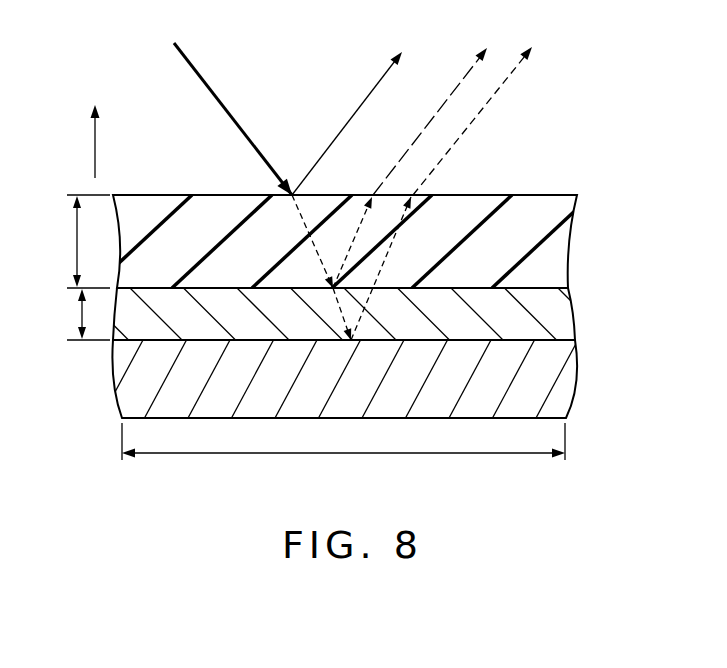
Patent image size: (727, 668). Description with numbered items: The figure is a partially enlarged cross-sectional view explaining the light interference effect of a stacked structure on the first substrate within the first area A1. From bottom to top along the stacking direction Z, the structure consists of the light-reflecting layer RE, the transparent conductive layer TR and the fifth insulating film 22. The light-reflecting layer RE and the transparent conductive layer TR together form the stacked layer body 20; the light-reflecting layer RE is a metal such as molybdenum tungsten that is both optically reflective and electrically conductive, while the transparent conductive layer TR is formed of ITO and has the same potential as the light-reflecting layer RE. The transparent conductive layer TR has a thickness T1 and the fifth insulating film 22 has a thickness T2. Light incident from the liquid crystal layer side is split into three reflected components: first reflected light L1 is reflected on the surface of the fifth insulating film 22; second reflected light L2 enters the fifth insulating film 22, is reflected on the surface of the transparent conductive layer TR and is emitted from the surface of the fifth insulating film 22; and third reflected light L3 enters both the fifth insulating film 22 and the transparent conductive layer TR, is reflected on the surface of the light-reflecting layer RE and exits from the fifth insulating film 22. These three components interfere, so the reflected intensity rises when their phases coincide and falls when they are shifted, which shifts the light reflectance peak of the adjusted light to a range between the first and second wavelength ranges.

The fifth insulating film 22 is at (558, 241).
The stacked layer body 20 is at (380, 353).
The transparent conductive layer TR is at (558, 314).
The light-reflecting layer RE is at (367, 379).
The first reflected light L1 is at (372, 90).
The second reflected light L2 is at (456, 85).
The third reflected light L3 is at (489, 104).
The Z-axis direction Z is at (95, 127).
The thickness of the fifth insulating film T2 is at (73, 243).
The thickness of the transparent conductive layer T1 is at (78, 315).
The first area A1 is at (347, 455).